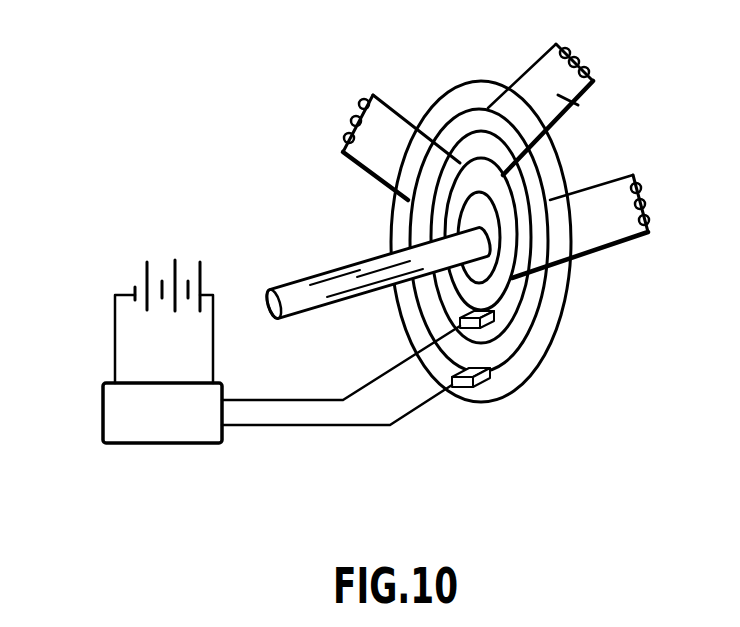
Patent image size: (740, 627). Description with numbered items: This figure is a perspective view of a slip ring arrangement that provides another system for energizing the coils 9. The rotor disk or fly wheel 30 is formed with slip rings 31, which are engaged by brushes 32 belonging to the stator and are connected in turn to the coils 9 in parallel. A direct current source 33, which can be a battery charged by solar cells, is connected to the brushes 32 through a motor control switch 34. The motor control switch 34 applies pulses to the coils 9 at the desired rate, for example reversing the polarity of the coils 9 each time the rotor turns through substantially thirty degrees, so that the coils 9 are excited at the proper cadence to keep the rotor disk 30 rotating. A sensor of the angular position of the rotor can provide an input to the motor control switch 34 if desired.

The coils 9 is at (380, 125).
The rotor disk or fly wheel 30 is at (543, 353).
The slip rings 31 is at (518, 296).
The brushes 32 is at (460, 319).
The direct current source 33 is at (197, 293).
The motor control switch 34 is at (103, 403).